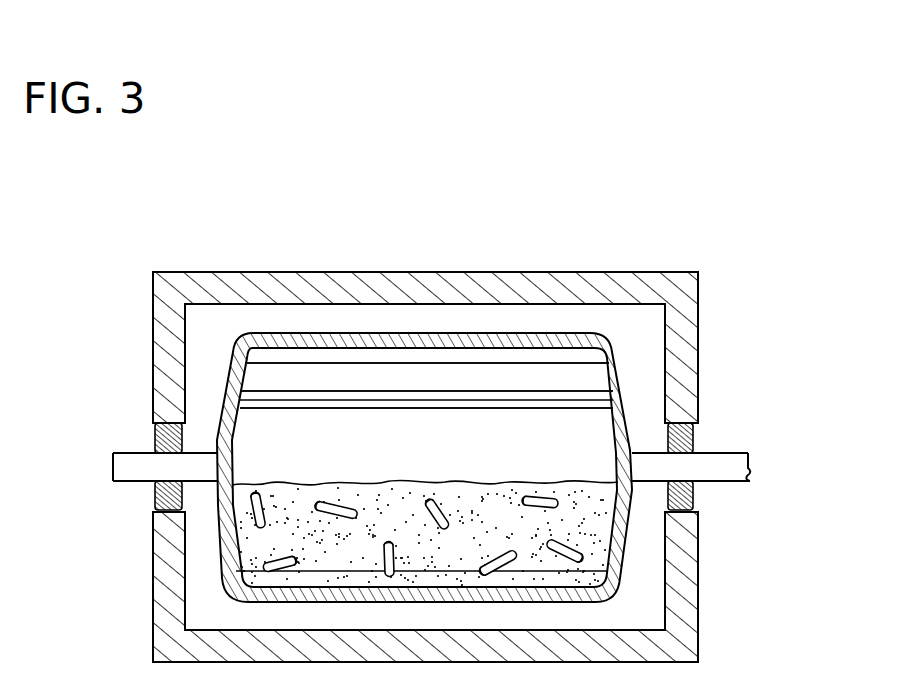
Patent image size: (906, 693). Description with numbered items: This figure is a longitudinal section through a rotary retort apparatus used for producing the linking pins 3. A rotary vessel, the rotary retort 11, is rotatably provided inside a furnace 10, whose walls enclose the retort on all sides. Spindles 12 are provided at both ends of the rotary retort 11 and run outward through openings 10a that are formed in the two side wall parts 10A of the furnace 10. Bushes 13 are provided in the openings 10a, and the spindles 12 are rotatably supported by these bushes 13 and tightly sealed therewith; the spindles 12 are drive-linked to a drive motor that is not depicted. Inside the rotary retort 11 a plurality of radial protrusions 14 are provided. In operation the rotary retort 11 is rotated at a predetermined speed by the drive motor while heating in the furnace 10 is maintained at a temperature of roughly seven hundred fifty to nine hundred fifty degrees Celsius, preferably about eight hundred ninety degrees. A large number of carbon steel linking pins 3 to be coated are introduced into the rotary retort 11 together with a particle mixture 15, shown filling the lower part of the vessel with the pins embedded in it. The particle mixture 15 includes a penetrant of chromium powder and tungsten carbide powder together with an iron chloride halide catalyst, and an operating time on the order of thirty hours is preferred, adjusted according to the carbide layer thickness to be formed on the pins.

The furnace 10 is at (563, 278).
The side wall part 10A is at (156, 302).
The opening 10a is at (147, 430).
The rotary retort 11 is at (627, 375).
The spindle 12 is at (125, 453).
The bush 13 is at (155, 497).
The radial protrusion 14 is at (413, 408).
The particle mixture 15 is at (468, 483).
The linking pin 3 is at (325, 500).